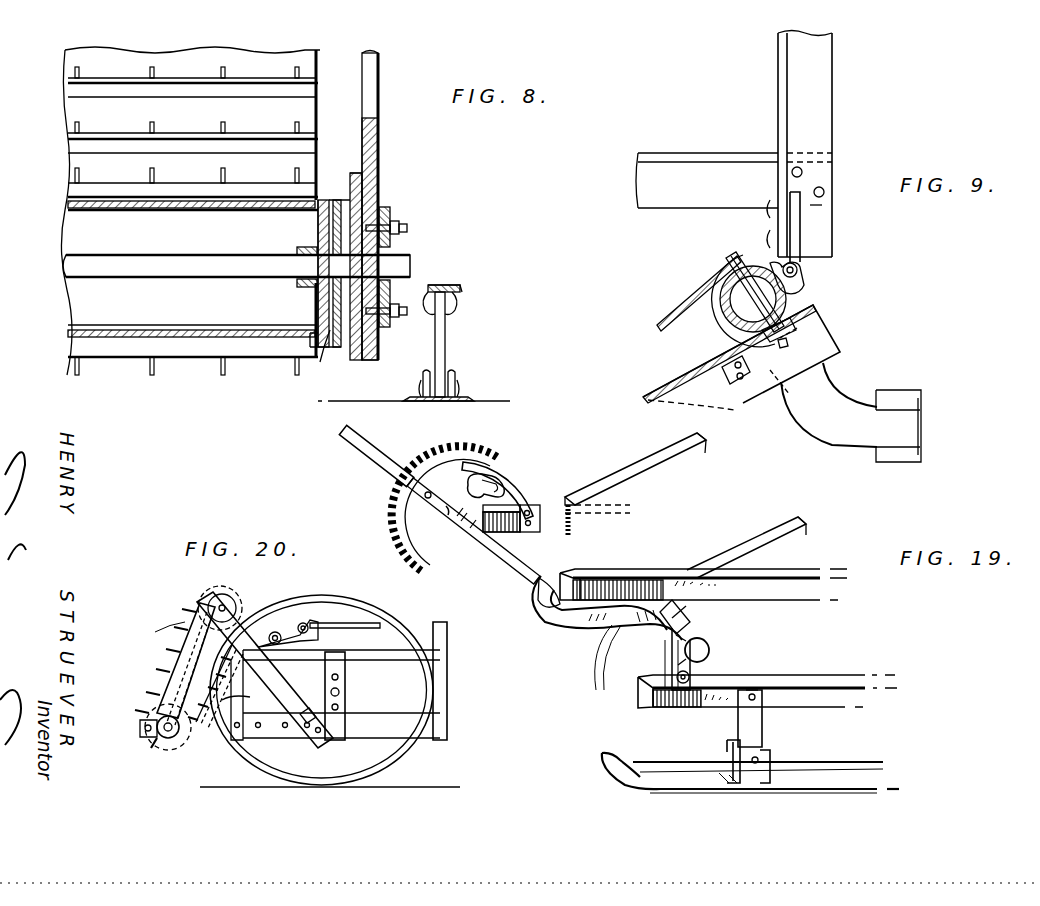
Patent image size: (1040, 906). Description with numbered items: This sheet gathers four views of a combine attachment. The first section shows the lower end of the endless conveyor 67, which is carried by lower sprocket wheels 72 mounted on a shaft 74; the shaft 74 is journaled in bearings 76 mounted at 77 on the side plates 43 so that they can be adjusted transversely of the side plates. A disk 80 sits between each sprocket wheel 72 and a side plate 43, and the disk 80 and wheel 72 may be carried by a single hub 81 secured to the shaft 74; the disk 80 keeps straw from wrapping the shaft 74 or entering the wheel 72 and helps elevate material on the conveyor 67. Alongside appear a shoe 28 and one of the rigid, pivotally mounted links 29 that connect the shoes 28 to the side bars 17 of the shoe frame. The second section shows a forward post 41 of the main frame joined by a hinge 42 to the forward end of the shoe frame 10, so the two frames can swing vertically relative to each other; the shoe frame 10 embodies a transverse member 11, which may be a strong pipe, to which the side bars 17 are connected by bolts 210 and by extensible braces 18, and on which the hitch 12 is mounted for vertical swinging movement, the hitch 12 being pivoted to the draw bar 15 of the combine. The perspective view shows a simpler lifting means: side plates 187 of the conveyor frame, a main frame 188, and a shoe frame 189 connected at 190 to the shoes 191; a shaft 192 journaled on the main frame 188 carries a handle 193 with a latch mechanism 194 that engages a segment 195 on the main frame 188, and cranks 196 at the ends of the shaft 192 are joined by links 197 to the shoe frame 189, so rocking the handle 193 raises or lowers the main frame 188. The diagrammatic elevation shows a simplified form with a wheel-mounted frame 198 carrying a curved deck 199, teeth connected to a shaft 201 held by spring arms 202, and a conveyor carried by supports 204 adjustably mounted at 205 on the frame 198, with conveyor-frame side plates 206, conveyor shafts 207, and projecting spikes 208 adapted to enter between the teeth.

In FIG. 8, the endless conveyor 67 is at (303, 115).
In FIG. 8, the lower sprocket wheels 72 is at (312, 308).
In FIG. 8, the shaft 74 is at (400, 269).
In FIG. 8, the bearings 76 is at (390, 210).
In FIG. 8, the bearing mounting 77 is at (399, 222).
In FIG. 8, the disk 80 is at (358, 178).
In FIG. 8, the hub 81 is at (330, 293).
In FIG. 8, the side plates 43 is at (375, 152).
In FIG. 8, the side bars 17 is at (458, 291).
In FIG. 9, the side bars 17 is at (822, 347).
In FIG. 8, the links 29 is at (445, 347).
In FIG. 8, the shoes 28 is at (474, 400).
In FIG. 9, the forward posts 41 is at (832, 100).
In FIG. 9, the hinges 42 is at (810, 220).
In FIG. 9, the longitudinally extensible braces 18 is at (688, 302).
In FIG. 9, the transverse member 11 is at (728, 312).
In FIG. 9, the shoe frame 10 is at (640, 400).
In FIG. 9, the bolts 210 is at (758, 303).
In FIG. 9, the hitch 12 is at (833, 403).
In FIG. 9, the draw bar 15 is at (905, 455).
In FIG. 19, the side plates of the conveyor frame 187 is at (690, 447).
In FIG. 19, the main frame 188 is at (572, 568).
In FIG. 19, the shoe frame 189 is at (787, 683).
In FIG. 19, the connection 190 is at (760, 735).
In FIG. 19, the shoes 191 is at (823, 780).
In FIG. 19, the shaft 192 is at (523, 573).
In FIG. 19, the handle 193 is at (395, 456).
In FIG. 19, the latch mechanism 194 is at (410, 484).
In FIG. 19, the segment 195 is at (520, 487).
In FIG. 19, the cranks 196 is at (480, 477).
In FIG. 19, the links 197 is at (697, 668).
In FIG. 20, the wheel-mounted frame 198 is at (427, 735).
In FIG. 20, the curved deck 199 is at (266, 711).
In FIG. 20, the shaft 201 is at (323, 612).
In FIG. 20, the spring arms 202 is at (357, 622).
In FIG. 20, the supports 204 is at (317, 696).
In FIG. 20, the adjustable mounting 205 is at (318, 748).
In FIG. 20, the side plates of the conveyor frame 206 is at (178, 634).
In FIG. 20, the conveyor shafts 207 is at (270, 622).
In FIG. 20, the projecting spikes 208 is at (160, 672).